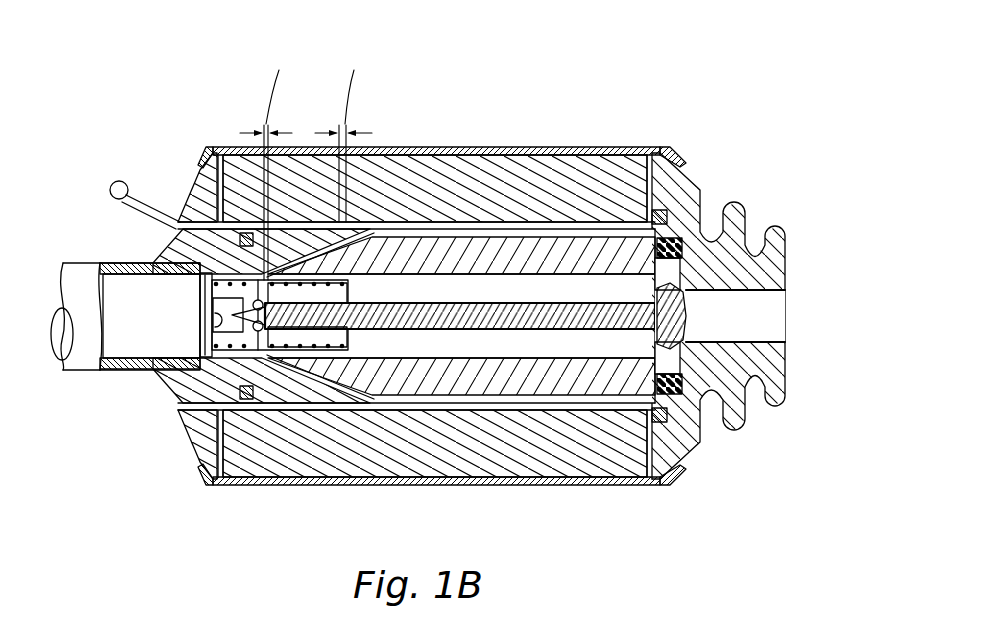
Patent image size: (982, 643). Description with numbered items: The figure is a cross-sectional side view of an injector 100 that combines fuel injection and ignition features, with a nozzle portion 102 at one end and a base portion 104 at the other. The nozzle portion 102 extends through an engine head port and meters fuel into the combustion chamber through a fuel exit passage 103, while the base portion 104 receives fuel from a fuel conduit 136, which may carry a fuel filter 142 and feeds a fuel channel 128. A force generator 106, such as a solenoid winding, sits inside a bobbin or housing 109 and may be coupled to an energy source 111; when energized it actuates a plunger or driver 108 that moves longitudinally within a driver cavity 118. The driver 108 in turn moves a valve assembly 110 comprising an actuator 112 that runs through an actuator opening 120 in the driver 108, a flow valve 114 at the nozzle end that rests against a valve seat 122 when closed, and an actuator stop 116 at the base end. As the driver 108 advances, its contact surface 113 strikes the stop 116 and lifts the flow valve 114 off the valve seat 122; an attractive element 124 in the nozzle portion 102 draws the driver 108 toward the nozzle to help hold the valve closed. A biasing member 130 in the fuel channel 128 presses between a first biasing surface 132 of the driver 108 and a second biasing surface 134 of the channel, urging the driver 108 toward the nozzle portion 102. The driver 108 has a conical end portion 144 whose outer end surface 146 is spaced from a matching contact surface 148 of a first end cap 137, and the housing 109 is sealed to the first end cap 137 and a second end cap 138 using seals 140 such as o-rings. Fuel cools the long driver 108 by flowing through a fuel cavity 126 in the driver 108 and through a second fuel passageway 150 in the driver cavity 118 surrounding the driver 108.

The injector 100 is at (441, 279).
The nozzle portion 102 is at (764, 466).
The fuel exit passage 103 is at (768, 337).
The base portion 104 is at (90, 465).
The force generator 106 is at (577, 150).
The driver 108 is at (441, 150).
The housing 109 is at (510, 302).
The valve assembly 110 is at (603, 292).
The energy source 111 is at (127, 183).
The actuator 112 is at (552, 352).
The contact surface 113 is at (585, 185).
The flow valve 114 is at (690, 318).
The actuator stop 116 is at (200, 403).
The driver cavity 118 is at (472, 237).
The actuator opening 120 is at (517, 273).
The valve seat 122 is at (700, 283).
The attractive element 124 is at (725, 255).
The fuel cavity 126 is at (415, 400).
The fuel channel 128 is at (287, 355).
The biasing member 130 is at (216, 278).
The first biasing surface 132 is at (413, 352).
The second biasing surface 134 is at (211, 340).
The fuel conduit 136 is at (70, 272).
The first end cap 137 is at (188, 200).
The second end cap 138 is at (684, 165).
The seals 140 is at (694, 200).
The fuel filter 142 is at (148, 276).
The end portion 144 is at (340, 345).
The outer end surface 146 is at (372, 150).
The contact surface 148 is at (302, 150).
The second fuel passageway 150 is at (600, 395).